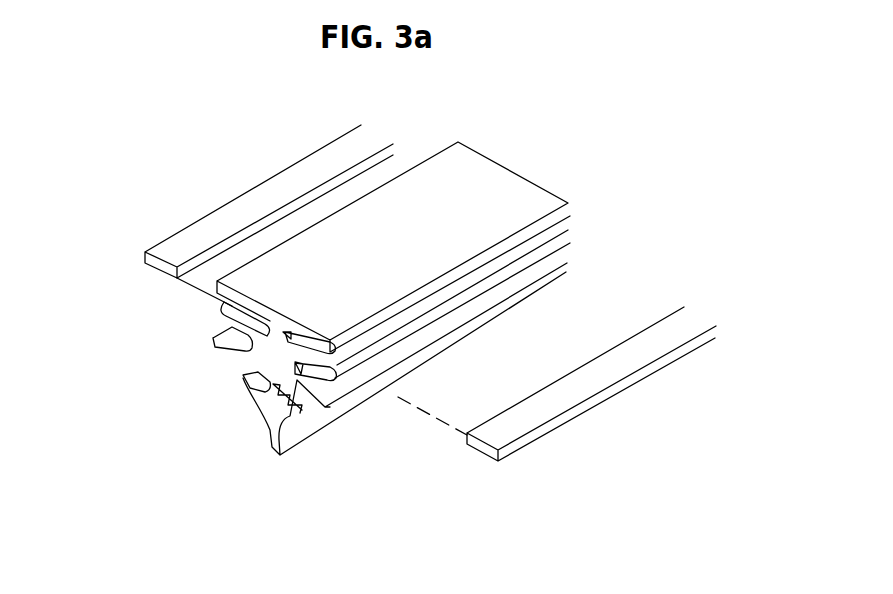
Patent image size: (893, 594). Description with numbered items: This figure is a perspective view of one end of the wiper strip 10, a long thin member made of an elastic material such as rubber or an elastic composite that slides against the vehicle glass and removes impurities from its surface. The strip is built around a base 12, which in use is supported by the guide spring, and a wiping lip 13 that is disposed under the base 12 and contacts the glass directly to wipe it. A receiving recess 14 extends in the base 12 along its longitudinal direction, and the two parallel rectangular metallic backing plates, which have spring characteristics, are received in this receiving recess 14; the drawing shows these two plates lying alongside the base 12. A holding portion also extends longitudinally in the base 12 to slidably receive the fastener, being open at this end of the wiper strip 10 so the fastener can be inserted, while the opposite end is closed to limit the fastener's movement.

The wiper strip 10 is at (76, 140).
The base 12 is at (248, 280).
The wiping lip 13 is at (305, 438).
The receiving recess 14 is at (470, 280).